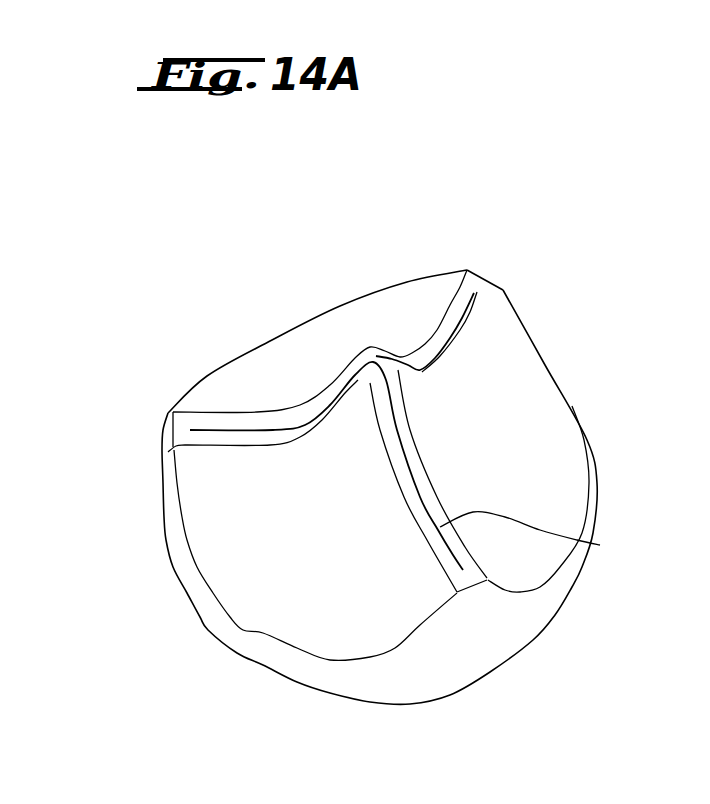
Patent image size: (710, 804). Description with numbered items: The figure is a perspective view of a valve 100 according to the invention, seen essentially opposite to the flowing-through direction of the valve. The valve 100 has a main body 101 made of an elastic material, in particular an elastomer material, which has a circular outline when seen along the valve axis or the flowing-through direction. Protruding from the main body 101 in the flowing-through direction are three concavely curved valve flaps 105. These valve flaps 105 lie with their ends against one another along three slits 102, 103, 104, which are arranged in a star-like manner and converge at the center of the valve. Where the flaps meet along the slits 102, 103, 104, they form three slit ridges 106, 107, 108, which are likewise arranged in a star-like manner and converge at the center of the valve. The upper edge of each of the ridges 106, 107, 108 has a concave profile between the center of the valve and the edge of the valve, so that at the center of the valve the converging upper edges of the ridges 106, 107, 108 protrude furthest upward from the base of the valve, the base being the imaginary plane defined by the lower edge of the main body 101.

The valve 100 is at (185, 650).
The main body 101 is at (323, 677).
The slit 102 is at (596, 543).
The slit 103 is at (462, 330).
The slit 104 is at (228, 430).
The valve flap 105 is at (343, 328).
The slit ridge 106 is at (487, 603).
The slit ridge 107 is at (504, 261).
The slit ridge 108 is at (151, 429).